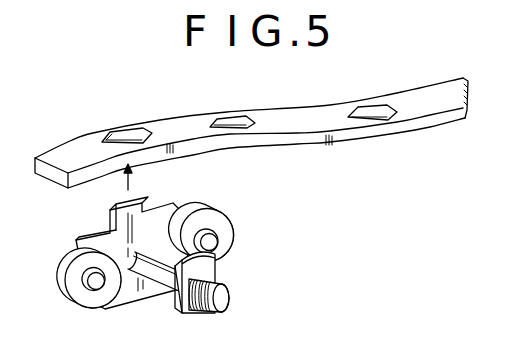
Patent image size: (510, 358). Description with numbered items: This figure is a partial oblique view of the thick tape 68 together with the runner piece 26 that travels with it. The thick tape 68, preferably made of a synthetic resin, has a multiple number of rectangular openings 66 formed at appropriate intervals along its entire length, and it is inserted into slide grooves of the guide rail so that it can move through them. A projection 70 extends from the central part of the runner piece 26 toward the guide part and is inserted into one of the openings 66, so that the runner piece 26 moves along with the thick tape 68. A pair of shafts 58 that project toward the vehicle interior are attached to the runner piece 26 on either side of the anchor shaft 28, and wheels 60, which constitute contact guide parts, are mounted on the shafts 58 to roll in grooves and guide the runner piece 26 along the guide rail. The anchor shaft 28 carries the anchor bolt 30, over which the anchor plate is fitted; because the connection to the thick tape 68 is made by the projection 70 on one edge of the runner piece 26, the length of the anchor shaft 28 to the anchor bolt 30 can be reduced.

The thick tape 68 is at (305, 122).
The rectangular openings 66 is at (124, 133).
The projection 70 is at (146, 211).
The runner piece 26 is at (127, 239).
The anchor shaft 28 is at (167, 283).
The wheels 60 is at (72, 290).
The shafts 58 is at (95, 287).
The anchor bolt 30 is at (223, 300).